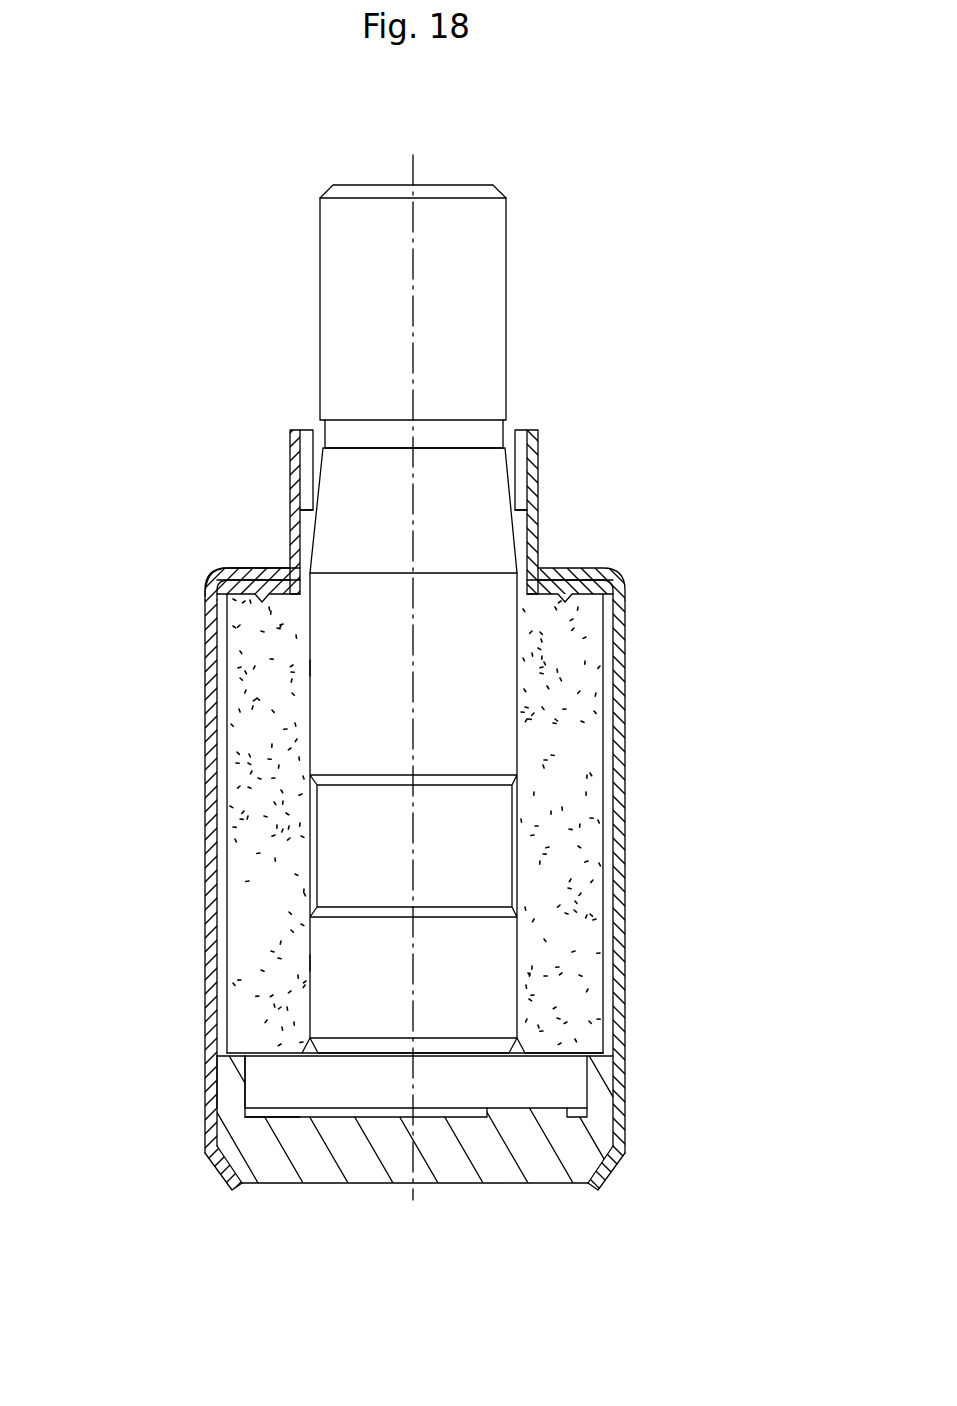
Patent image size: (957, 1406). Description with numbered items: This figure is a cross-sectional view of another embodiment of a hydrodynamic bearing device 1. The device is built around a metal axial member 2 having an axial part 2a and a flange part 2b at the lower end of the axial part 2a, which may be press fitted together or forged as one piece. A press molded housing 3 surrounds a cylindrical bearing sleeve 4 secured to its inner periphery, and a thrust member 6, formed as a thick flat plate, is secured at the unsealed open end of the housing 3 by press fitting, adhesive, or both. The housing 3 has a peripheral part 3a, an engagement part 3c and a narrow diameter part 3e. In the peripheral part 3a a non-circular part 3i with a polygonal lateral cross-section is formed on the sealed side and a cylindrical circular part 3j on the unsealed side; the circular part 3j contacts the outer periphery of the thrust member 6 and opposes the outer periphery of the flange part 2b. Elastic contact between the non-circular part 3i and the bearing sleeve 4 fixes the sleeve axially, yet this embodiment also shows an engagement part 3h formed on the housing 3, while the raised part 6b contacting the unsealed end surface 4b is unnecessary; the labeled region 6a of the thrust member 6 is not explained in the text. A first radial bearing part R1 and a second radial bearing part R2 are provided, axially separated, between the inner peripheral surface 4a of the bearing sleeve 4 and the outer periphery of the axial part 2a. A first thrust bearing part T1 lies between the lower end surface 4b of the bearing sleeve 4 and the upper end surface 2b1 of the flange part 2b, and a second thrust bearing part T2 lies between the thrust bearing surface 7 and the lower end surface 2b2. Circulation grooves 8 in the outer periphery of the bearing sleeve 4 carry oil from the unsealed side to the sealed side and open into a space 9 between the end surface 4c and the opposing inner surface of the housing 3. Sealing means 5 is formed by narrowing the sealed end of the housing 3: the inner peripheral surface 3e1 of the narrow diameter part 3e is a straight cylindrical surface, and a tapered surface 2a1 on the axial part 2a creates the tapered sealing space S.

The hydrodynamic bearing device 1 is at (687, 323).
The axial member 2 is at (520, 234).
The axial part 2a is at (352, 238).
The tapered surface 2a1 is at (304, 472).
The flange part 2b is at (400, 1088).
The upper end surface 2b1 is at (262, 1053).
The lower end surface 2b2 is at (297, 1105).
The housing 3 is at (642, 736).
The peripheral part 3a is at (206, 843).
The engagement part 3c is at (283, 566).
The narrow diameter part 3e is at (297, 530).
The inner peripheral surface 3e1 is at (313, 540).
The engagement part 3h is at (215, 1192).
The non-circular part 3i is at (630, 669).
The circular part 3j is at (628, 1157).
The bearing sleeve 4 is at (592, 841).
The inner peripheral surface 4a is at (515, 640).
The lower end surface 4b is at (548, 1058).
The end surface 4c is at (577, 592).
The sealing means 5 is at (562, 476).
The thrust member 6 is at (606, 1148).
The elastic member bottom 6a is at (462, 1167).
The raised part 6b is at (232, 1073).
The thrust bearing surface 7 is at (313, 1105).
The circulation grooves 8 is at (222, 777).
The space 9 is at (238, 584).
The tapered sealing space S is at (520, 537).
The first radial bearing part R1 is at (293, 673).
The second radial bearing part R2 is at (295, 968).
The first thrust bearing part T1 is at (580, 1052).
The second thrust bearing part T2 is at (542, 1126).